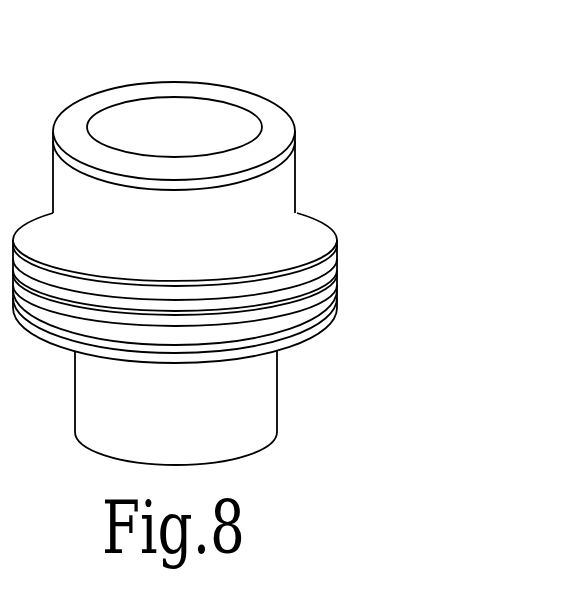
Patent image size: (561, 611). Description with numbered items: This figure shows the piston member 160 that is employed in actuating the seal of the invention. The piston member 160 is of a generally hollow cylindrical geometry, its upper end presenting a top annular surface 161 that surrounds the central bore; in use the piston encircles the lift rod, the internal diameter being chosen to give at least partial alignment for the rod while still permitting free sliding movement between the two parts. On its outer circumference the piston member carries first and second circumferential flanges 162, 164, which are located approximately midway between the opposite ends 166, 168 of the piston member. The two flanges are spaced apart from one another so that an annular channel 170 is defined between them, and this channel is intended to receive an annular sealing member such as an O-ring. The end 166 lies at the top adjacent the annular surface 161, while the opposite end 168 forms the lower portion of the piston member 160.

The piston member 160 is at (312, 172).
The top annular surface 161 is at (255, 107).
The first circumferential flange 162 is at (336, 262).
The second circumferential flange 164 is at (323, 320).
The end of the piston member 166 is at (193, 83).
The end of the piston member 168 is at (248, 453).
The annular channel 170 is at (320, 297).